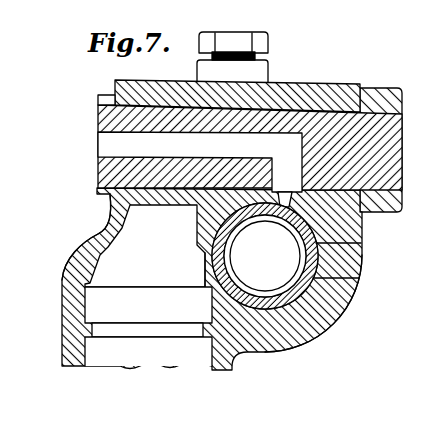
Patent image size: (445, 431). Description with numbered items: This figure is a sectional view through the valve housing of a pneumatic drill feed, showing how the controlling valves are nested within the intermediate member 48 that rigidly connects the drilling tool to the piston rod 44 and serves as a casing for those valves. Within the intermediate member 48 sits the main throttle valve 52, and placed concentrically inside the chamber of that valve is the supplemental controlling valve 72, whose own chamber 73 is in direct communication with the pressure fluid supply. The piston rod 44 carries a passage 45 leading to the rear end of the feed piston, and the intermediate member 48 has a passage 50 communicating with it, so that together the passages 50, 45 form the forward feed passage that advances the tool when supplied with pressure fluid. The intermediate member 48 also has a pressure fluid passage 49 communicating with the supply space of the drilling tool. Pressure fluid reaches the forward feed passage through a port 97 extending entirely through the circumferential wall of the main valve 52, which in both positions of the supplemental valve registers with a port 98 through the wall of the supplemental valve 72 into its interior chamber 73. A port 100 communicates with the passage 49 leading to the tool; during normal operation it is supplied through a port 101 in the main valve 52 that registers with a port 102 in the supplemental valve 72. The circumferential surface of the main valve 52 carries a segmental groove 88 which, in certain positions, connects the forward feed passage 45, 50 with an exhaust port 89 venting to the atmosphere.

The piston rod 44 is at (100, 173).
The passage 45 is at (98, 138).
The intermediate member 48 is at (70, 302).
The pressure fluid passage 49 is at (118, 257).
The passage 50 is at (289, 212).
The throttle valve 52 is at (318, 300).
The supplemental controlling valve 72 is at (363, 280).
The chamber 73 is at (335, 251).
The segmental groove 88 is at (318, 253).
The exhaust port 89 is at (358, 228).
The port 97 is at (214, 221).
The port 98 is at (233, 252).
The port 100 is at (208, 273).
The port 101 is at (252, 300).
The port 102 is at (270, 292).